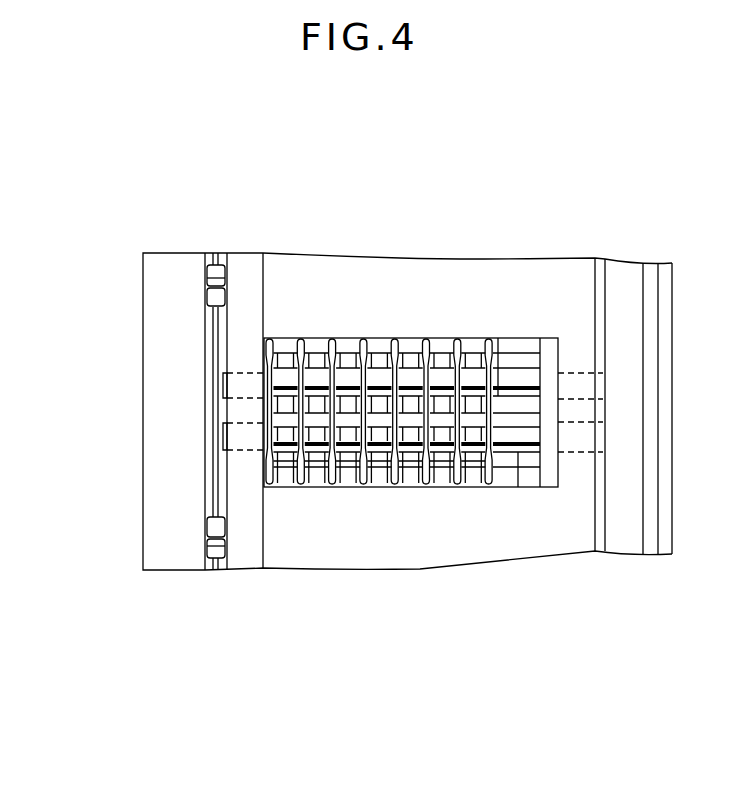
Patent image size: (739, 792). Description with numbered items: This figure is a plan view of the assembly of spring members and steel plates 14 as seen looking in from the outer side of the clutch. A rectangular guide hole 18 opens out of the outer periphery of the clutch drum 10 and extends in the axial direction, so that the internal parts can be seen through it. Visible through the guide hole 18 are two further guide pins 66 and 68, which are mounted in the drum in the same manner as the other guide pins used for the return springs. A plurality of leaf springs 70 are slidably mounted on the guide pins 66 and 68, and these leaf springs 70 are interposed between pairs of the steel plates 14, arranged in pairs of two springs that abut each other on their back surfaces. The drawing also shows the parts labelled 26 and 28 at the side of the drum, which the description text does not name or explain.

The clutch drum 10 is at (427, 540).
The steel plates 14 is at (283, 338).
The rectangular guide hole 18 is at (528, 343).
The cover plate 26 is at (162, 370).
The latch 28 is at (207, 282).
The guide pin 66 is at (525, 487).
The guide pin 68 is at (507, 383).
The leaf springs 70 is at (278, 487).